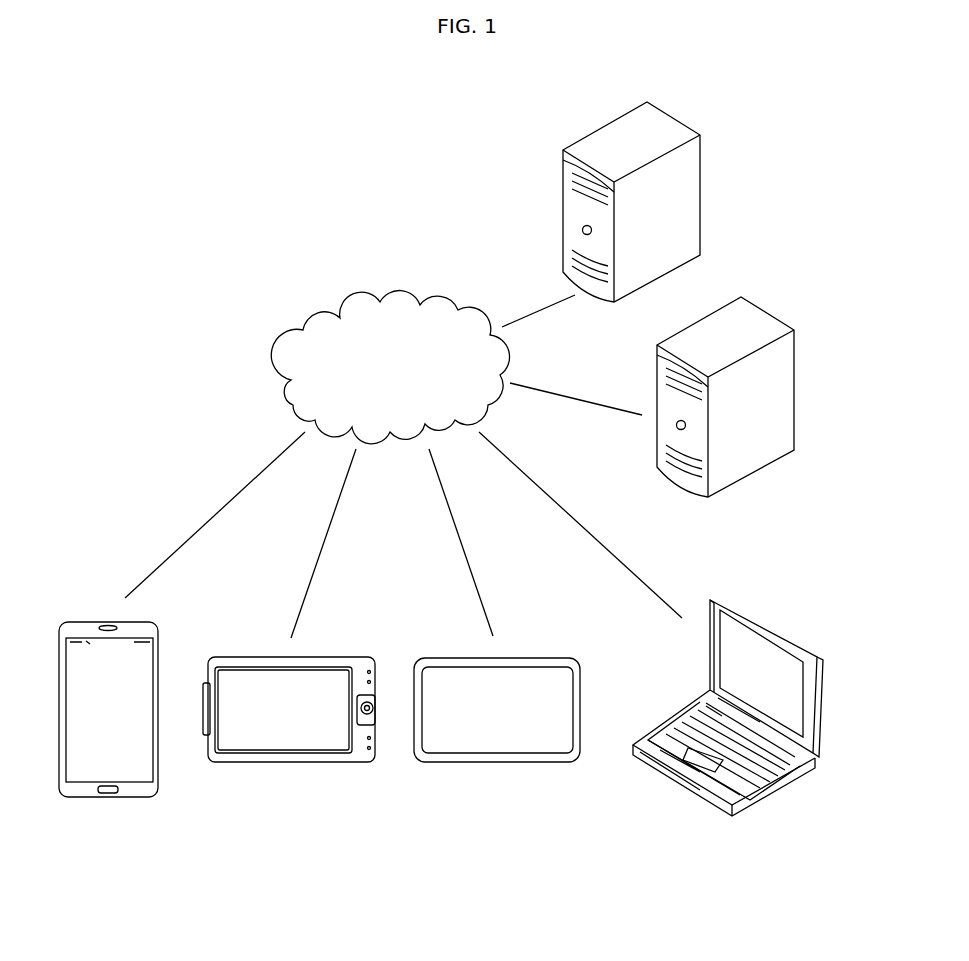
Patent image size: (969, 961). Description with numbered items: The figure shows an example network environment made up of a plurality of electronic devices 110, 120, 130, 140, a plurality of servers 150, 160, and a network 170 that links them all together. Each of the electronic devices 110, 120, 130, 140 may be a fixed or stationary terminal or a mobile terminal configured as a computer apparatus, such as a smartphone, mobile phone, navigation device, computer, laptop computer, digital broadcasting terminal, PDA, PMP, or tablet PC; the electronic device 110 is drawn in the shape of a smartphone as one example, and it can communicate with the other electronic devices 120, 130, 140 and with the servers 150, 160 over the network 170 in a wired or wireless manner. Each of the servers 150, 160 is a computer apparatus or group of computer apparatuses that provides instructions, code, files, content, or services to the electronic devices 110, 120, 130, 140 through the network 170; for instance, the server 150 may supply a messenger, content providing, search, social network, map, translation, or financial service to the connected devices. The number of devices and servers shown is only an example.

The electronic device 110 is at (108, 797).
The electronic device 120 is at (290, 762).
The electronic device 130 is at (497, 762).
The electronic device 140 is at (817, 703).
The server 150 is at (793, 387).
The server 160 is at (698, 192).
The network 170 is at (399, 297).